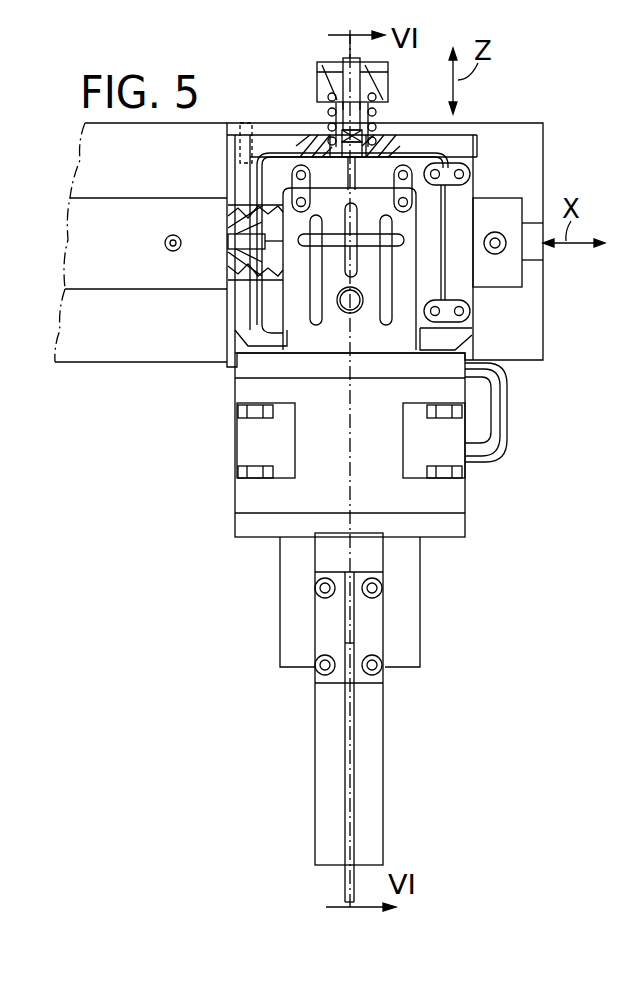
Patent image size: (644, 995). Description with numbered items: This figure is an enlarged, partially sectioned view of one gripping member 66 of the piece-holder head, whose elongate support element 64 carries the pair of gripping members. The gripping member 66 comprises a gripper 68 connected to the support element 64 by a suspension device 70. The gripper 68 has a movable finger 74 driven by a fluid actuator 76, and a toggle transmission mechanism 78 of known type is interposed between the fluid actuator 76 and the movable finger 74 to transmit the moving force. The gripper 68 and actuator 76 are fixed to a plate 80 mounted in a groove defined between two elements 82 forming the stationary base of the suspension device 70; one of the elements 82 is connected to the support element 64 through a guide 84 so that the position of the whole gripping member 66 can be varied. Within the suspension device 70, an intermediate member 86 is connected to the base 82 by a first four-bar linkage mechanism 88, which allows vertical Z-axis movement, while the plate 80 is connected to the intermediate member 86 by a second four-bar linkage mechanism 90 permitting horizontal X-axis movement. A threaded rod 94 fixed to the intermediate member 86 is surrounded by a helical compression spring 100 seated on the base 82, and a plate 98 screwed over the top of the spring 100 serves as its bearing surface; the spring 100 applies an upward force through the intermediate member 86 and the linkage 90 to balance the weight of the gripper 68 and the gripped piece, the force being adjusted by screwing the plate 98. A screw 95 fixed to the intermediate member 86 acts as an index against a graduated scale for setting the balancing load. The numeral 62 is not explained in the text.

The shift lever assembly 62 is at (305, 100).
The support element 64 is at (153, 345).
The gripping member 66 is at (482, 478).
The gripper 68 is at (430, 628).
The suspension device 70 is at (490, 338).
The movable finger 74 is at (366, 760).
The fluid actuator 76 is at (368, 485).
The toggle transmission mechanism 78 is at (293, 598).
The plate 80 is at (335, 273).
The elements forming stationary base 82 is at (460, 198).
The guide 84 is at (125, 275).
The intermediate member 86 is at (378, 173).
The first four-bar linkage mechanism 88 is at (452, 170).
The second four-bar linkage mechanism 90 is at (400, 183).
The threaded rod 94 is at (360, 90).
The screw 95 is at (240, 243).
The plate 98 is at (370, 72).
The helical compression spring 100 is at (377, 118).